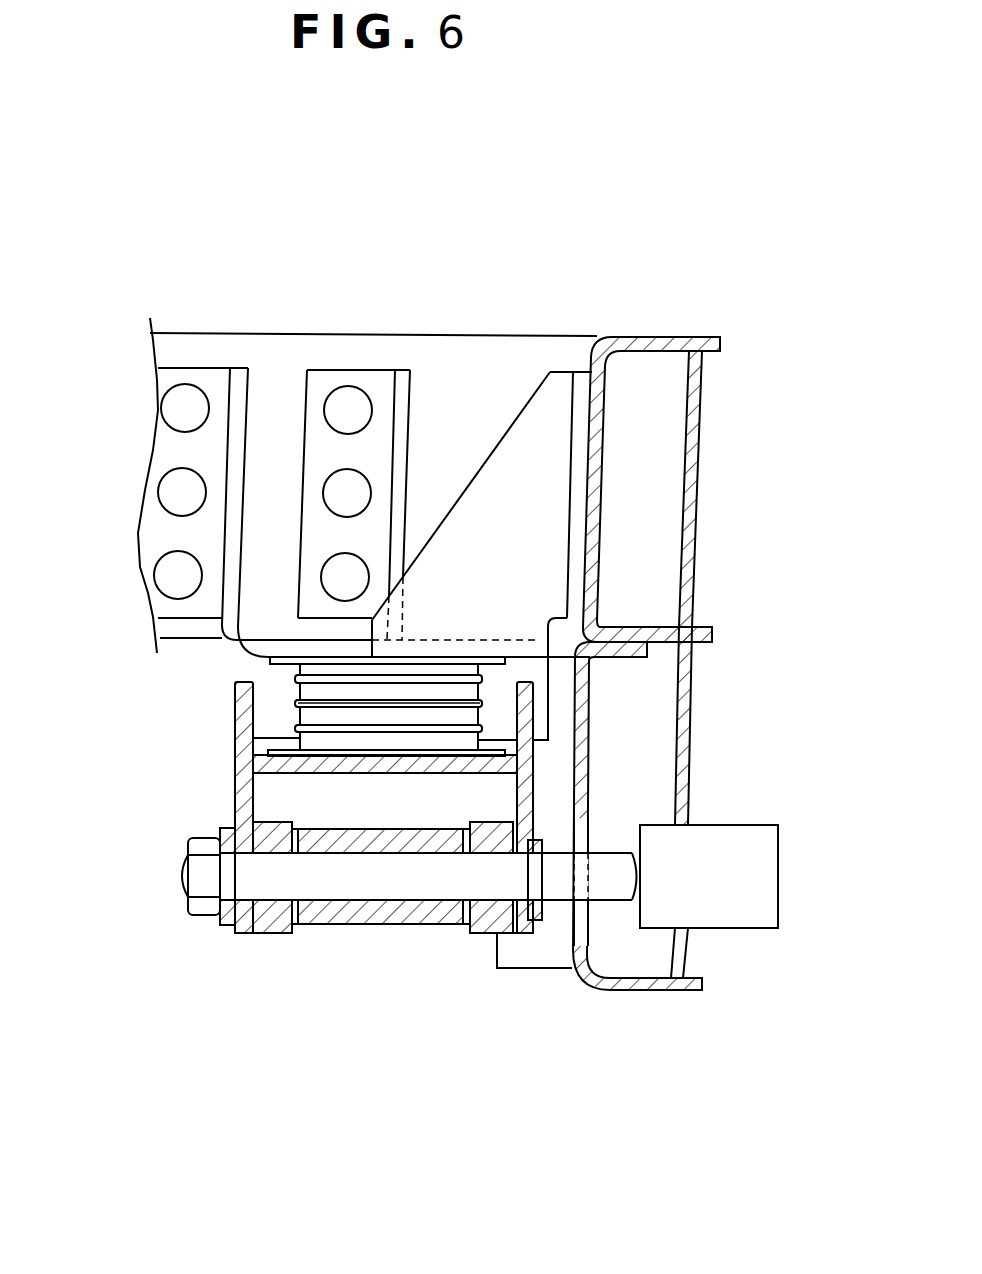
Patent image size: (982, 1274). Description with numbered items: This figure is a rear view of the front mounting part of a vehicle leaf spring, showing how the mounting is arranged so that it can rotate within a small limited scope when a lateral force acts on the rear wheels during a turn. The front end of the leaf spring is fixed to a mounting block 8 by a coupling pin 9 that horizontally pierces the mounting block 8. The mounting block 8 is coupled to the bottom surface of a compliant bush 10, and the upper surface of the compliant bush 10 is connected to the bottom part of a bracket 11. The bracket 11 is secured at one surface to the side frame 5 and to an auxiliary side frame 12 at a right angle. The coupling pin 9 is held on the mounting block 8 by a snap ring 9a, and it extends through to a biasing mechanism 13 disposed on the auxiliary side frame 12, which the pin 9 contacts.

The side frame 5 is at (663, 345).
The mounting block 8 is at (242, 782).
The coupling pin 9 is at (275, 883).
The snap ring 9a is at (535, 903).
The compliant bush 10 is at (327, 717).
The bracket 11 is at (502, 473).
The auxiliary side frame 12 is at (600, 992).
The biasing mechanism 13 is at (758, 892).